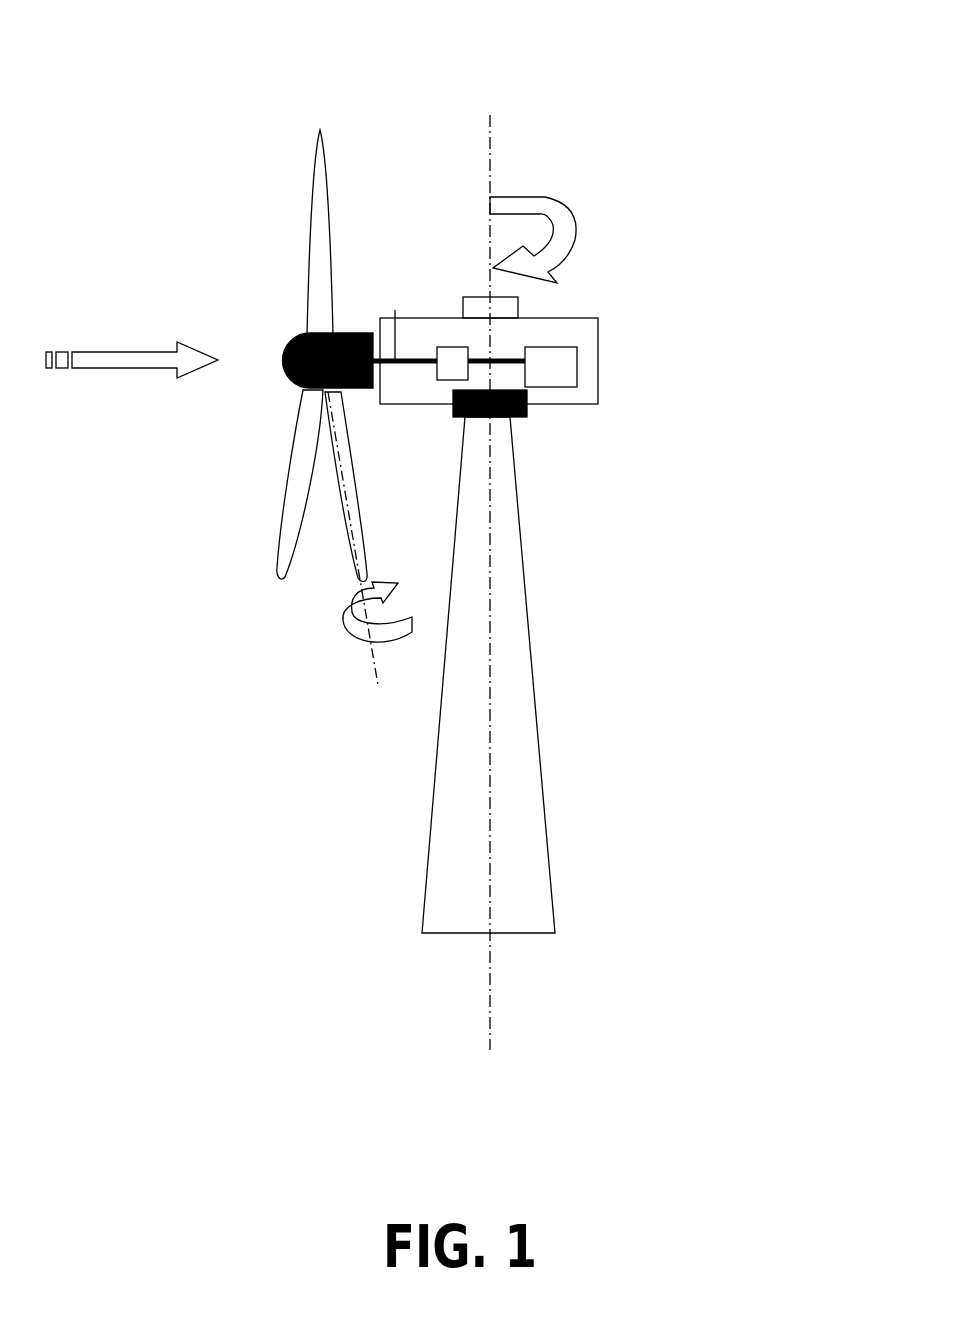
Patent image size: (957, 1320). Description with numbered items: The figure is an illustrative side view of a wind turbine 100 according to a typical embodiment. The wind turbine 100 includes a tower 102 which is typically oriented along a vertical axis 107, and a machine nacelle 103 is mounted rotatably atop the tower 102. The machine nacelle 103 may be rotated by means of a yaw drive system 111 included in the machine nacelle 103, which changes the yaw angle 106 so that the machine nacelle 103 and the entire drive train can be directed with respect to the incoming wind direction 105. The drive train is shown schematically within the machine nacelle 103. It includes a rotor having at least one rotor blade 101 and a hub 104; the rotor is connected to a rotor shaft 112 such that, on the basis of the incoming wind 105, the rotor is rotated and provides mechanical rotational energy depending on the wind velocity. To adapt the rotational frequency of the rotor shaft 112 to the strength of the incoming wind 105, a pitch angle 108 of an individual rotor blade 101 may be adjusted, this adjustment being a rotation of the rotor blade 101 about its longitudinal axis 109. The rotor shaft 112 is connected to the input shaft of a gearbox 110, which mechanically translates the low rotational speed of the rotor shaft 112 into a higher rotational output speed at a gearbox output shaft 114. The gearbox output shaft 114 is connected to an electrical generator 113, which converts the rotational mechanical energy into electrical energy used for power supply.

The wind turbine 100 is at (612, 95).
The rotor blade 101 is at (302, 262).
The tower 102 is at (540, 702).
The machine nacelle 103 is at (600, 352).
The hub 104 is at (352, 330).
The incoming wind direction 105 is at (177, 375).
The yaw angle 106 is at (572, 238).
The vertical axis 107 is at (490, 115).
The pitch angle 108 is at (348, 628).
The longitudinal axis 109 is at (378, 672).
The gearbox 110 is at (450, 383).
The yaw drive system 111 is at (513, 417).
The rotor shaft 112 is at (421, 321).
The electrical generator 113 is at (558, 370).
The gearbox output shaft 114 is at (490, 360).